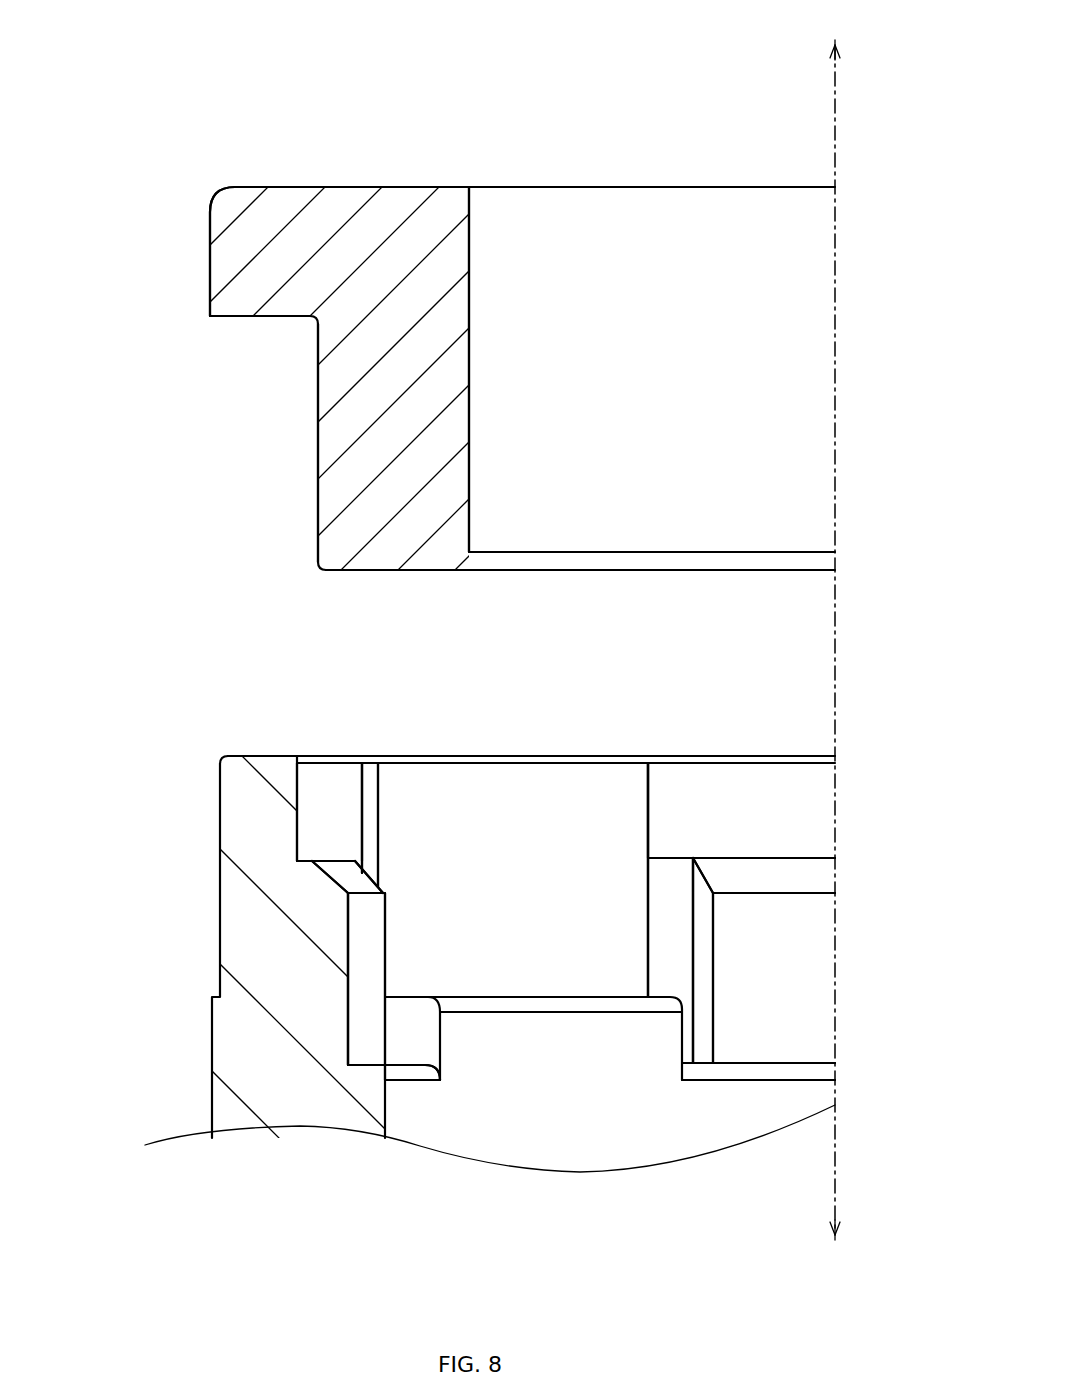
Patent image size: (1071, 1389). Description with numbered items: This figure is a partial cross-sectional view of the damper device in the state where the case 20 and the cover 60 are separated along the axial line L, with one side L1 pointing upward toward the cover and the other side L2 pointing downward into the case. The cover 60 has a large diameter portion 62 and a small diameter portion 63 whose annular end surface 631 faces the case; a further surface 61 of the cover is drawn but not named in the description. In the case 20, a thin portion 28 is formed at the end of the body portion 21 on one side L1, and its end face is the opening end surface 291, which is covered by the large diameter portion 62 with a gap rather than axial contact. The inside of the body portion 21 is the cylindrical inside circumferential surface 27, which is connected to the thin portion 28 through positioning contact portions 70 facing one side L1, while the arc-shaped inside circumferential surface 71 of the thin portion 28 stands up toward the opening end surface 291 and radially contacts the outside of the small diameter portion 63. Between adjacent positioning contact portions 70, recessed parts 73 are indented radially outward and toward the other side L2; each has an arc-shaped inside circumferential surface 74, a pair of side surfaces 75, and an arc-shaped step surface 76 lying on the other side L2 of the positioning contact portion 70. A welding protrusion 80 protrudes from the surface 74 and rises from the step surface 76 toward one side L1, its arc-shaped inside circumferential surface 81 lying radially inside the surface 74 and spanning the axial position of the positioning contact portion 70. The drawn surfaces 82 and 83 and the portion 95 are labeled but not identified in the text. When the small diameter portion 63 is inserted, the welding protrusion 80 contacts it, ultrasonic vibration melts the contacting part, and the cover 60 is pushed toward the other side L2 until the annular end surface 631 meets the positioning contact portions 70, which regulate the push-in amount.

The cover 60 is at (348, 177).
The inner peripheral surface of cap 61 is at (470, 208).
The large diameter portion 62 is at (209, 278).
The small diameter portion 63 is at (317, 407).
The annular end surface 631 is at (366, 571).
The opening end surface 291 is at (258, 752).
The thin portion 28 is at (220, 828).
The body portion 21 is at (379, 1026).
The case 20 is at (379, 1026).
The positioning contact portion 70 is at (548, 990).
The arc-shaped inside circumferential surface 71 is at (540, 778).
The recessed part 73 is at (561, 773).
The arc-shaped inside circumferential surface 74 is at (323, 777).
The side surface 75 is at (367, 765).
The arc-shaped step surface 76 is at (355, 1060).
The seal contact portion 95 is at (549, 1130).
The welding protrusion 80 is at (408, 938).
The arc-shaped inside circumferential surface 81 is at (347, 1012).
The inclined surface 82 is at (340, 882).
The top surface of projection 83 is at (308, 858).
The cylindrical inside circumferential surface 27 is at (553, 1140).
The axial line L is at (840, 300).
The one side in the axial direction L1 is at (835, 32).
The other side in the axial direction L2 is at (835, 1247).